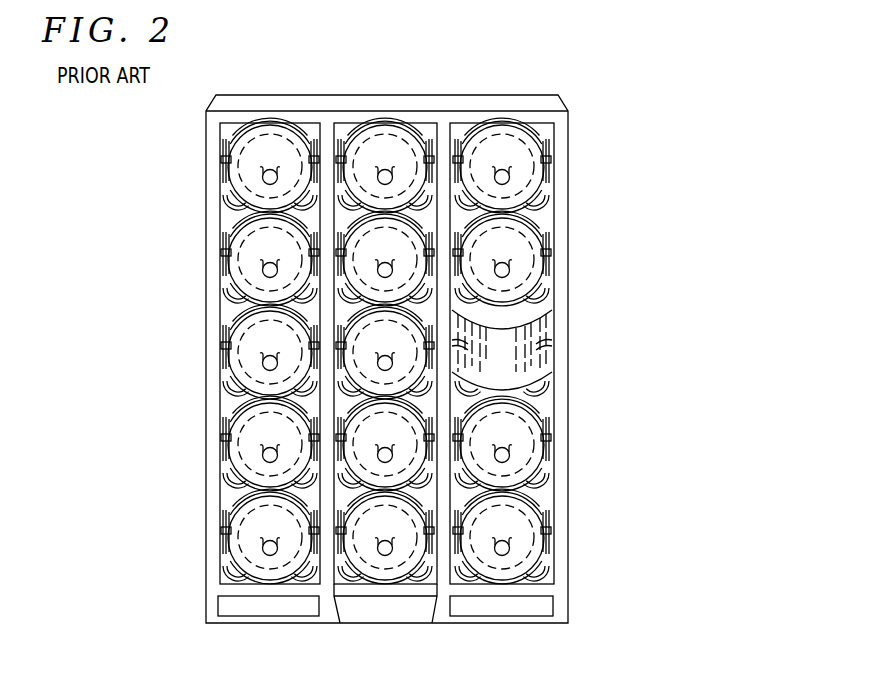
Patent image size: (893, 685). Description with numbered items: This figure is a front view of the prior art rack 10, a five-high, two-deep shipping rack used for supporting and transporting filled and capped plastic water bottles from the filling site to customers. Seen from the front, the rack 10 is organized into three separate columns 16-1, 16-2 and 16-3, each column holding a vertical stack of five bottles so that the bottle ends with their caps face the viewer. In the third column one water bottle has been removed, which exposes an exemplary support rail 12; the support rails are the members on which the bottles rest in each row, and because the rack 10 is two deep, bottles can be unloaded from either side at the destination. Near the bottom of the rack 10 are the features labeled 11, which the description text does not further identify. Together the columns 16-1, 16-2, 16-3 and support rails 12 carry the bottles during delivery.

The rack 10 is at (681, 111).
The mounting slot 11 is at (280, 606).
The support rail 12 is at (508, 362).
The first column 16-1 is at (270, 123).
The second column 16-2 is at (385, 123).
The third column 16-3 is at (543, 319).